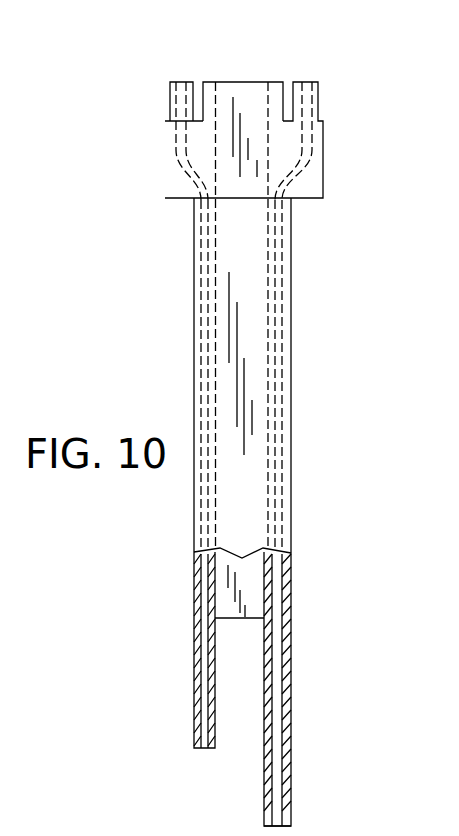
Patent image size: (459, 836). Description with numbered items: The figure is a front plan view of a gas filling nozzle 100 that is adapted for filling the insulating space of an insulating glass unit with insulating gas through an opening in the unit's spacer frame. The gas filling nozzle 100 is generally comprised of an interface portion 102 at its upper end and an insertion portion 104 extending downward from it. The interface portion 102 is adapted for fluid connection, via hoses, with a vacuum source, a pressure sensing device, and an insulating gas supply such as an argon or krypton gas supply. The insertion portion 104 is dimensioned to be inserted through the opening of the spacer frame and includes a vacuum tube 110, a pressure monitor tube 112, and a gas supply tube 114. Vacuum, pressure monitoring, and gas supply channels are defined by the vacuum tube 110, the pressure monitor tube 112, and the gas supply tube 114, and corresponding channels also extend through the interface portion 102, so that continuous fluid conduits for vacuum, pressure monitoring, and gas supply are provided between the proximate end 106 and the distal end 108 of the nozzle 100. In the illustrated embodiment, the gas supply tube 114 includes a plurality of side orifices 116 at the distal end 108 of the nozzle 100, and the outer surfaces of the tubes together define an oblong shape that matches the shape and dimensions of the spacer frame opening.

The gas filling nozzle 100 is at (131, 107).
The interface portion 102 is at (158, 167).
The insertion portion 104 is at (190, 319).
The proximate end 106 is at (285, 78).
The distal end 108 is at (298, 822).
The vacuum tube 110 is at (248, 573).
The pressure monitor tube 112 is at (193, 675).
The gas supply tube 114 is at (290, 668).
The side orifices 116 is at (287, 753).